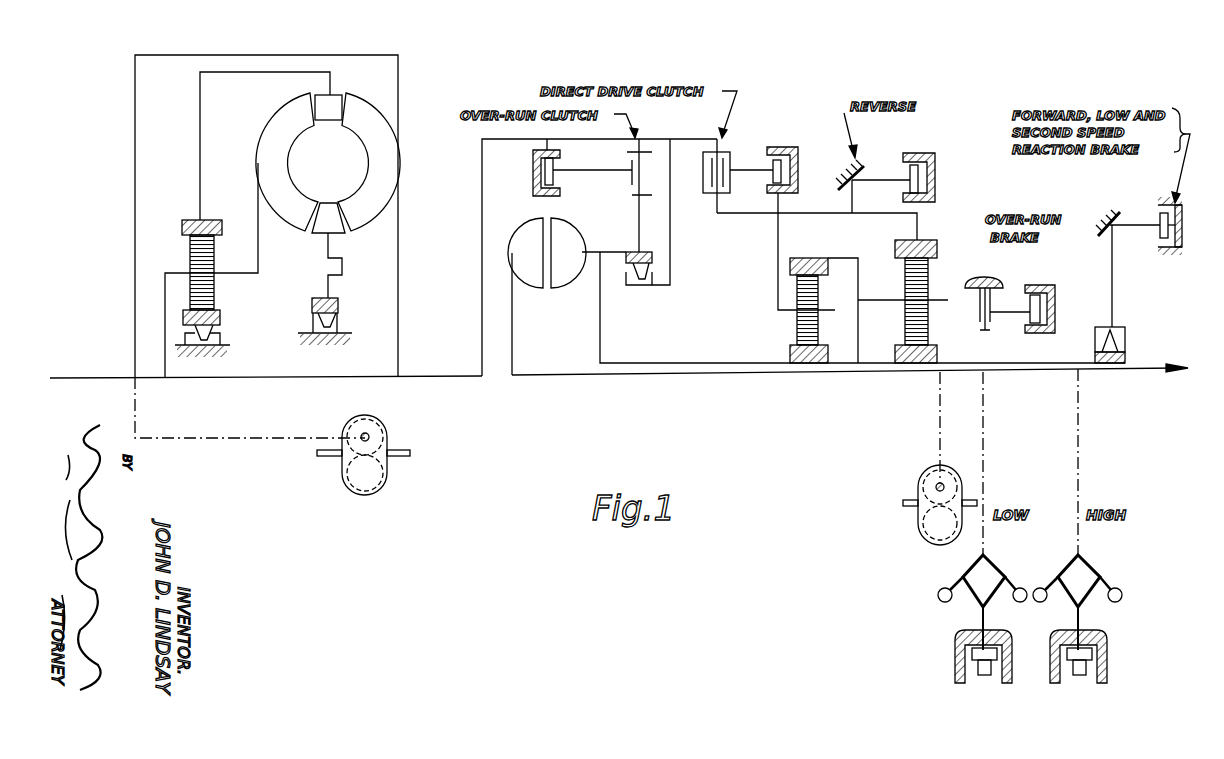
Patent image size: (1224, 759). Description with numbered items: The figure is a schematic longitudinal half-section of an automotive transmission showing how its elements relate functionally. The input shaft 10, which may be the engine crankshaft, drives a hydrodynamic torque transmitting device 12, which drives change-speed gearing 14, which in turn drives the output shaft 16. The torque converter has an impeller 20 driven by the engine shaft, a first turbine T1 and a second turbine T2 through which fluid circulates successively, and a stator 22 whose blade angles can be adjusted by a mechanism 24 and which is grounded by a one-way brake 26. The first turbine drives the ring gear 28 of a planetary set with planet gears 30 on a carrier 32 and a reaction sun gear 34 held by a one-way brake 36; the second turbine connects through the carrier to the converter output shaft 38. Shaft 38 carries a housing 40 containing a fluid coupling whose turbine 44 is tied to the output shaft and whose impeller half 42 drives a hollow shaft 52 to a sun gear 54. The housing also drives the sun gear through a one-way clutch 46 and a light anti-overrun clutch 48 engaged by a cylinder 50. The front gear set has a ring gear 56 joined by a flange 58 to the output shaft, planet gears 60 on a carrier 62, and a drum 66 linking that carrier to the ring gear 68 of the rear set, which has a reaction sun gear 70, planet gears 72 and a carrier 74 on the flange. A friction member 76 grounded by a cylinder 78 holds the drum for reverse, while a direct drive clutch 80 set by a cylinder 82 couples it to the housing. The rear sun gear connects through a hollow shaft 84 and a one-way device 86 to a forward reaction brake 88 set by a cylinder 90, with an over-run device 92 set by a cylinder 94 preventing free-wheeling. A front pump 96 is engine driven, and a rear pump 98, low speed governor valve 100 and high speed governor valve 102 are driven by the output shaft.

The input shaft 10 is at (93, 376).
The hydrodynamic torque transmitting device 12 is at (333, 50).
The change-speed gearing 14 is at (777, 132).
The output shaft 16 is at (1180, 372).
The impeller 20 is at (378, 158).
The first turbine T1 is at (333, 102).
The second turbine T2 is at (278, 152).
The reaction element 22 is at (335, 233).
The adjusting mechanism 24 is at (343, 266).
The one-way brake 26 is at (340, 306).
The ring gear 28 is at (190, 220).
The planet gears 30 is at (190, 256).
The carrier 32 is at (240, 274).
The reaction sun gear 34 is at (221, 318).
The one-way brake 36 is at (212, 334).
The torque converter output shaft 38 is at (428, 375).
The housing 40 is at (482, 228).
The planet gear half 42 is at (563, 268).
The turbine 44 is at (535, 270).
The one-way clutch 46 is at (643, 281).
The anti-overrun clutch 48 is at (632, 176).
The hydraulic cylinder 50 is at (540, 183).
The hollow shaft 52 is at (716, 362).
The sun gear 54 is at (790, 356).
The ring gear 56 is at (816, 258).
The flange 58 is at (858, 290).
The planet gears 60 is at (812, 308).
The carrier 62 is at (777, 300).
The drum 66 is at (827, 213).
The ring gear 68 is at (932, 246).
The reaction sun gear 70 is at (936, 356).
The planet gears 72 is at (928, 278).
The carrier 74 is at (890, 301).
The friction member 76 is at (862, 168).
The cylinder 78 is at (936, 168).
The direct drive clutch 80 is at (723, 152).
The hydraulic cylinder 82 is at (784, 148).
The hollow shaft 84 is at (1048, 362).
The one-way torque-establishing device 86 is at (1127, 352).
The forward reaction friction torque-establishing device 88 is at (1112, 220).
The hydraulic cylinder 90 is at (1184, 225).
The over-run friction torque-establishing device 92 is at (996, 300).
The hydraulic cylinder 94 is at (1042, 308).
The front pump 96 is at (385, 437).
The rear pump 98 is at (932, 480).
The low speed governor valve 100 is at (985, 556).
The high speed governor valve 102 is at (1080, 556).